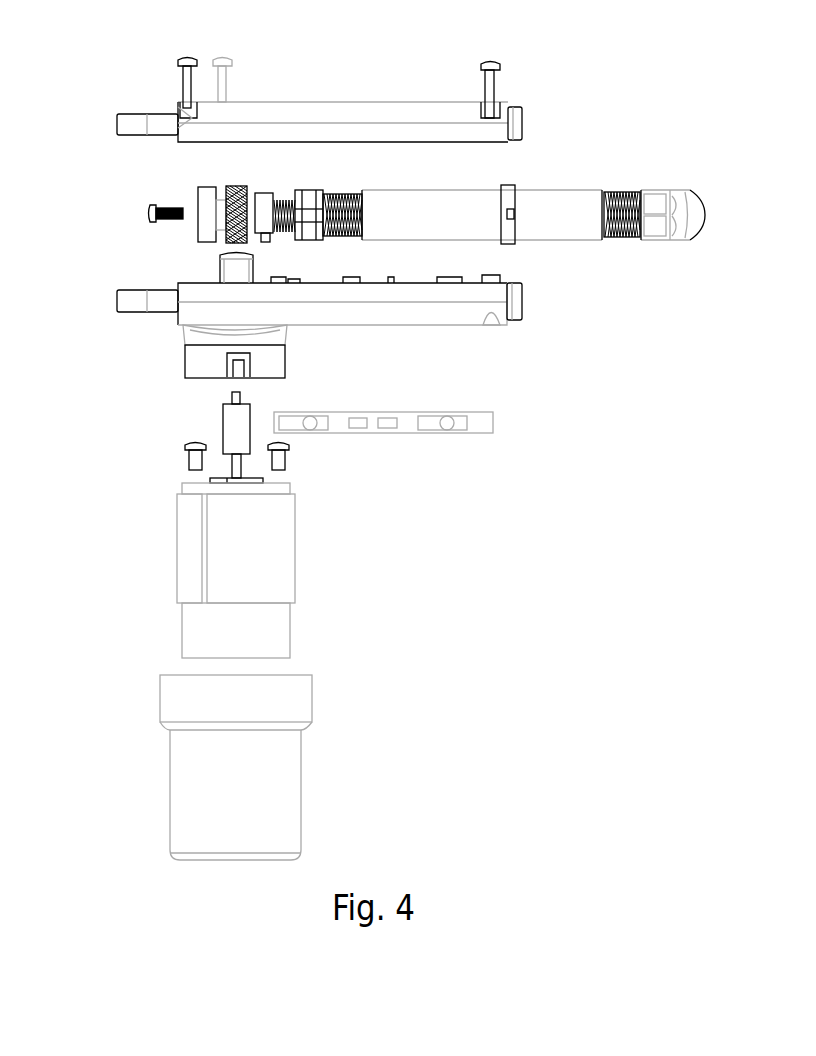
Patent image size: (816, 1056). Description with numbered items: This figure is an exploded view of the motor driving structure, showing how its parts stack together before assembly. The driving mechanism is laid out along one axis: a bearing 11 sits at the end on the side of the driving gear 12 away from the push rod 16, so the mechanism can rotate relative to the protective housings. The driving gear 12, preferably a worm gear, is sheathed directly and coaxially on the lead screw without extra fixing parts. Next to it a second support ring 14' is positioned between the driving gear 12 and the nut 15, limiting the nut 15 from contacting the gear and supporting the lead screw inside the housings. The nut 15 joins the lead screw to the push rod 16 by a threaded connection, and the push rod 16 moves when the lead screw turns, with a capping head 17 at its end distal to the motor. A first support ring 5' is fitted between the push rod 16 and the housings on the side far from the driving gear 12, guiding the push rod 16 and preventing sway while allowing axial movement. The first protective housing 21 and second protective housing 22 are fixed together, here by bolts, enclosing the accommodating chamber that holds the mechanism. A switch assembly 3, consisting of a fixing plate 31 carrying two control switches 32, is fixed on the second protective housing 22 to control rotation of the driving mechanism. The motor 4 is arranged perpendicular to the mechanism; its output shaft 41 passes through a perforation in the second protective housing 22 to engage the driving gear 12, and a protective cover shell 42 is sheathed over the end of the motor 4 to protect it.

The bearing 11 is at (205, 205).
The driving gear 12 is at (239, 200).
The second support ring 14' is at (303, 125).
The nut 15 is at (320, 200).
The push rod 16 is at (399, 205).
The first support ring 5' is at (548, 126).
The capping head 17 is at (686, 195).
The first protective housing 21 is at (215, 115).
The second protective housing 22 is at (230, 310).
The output shaft 41 is at (232, 398).
The motor 4 is at (220, 561).
The protective cover shell 42 is at (223, 777).
The fixing plate 31 is at (338, 421).
The control switch 32 is at (435, 424).
The switch assembly 3 is at (438, 518).